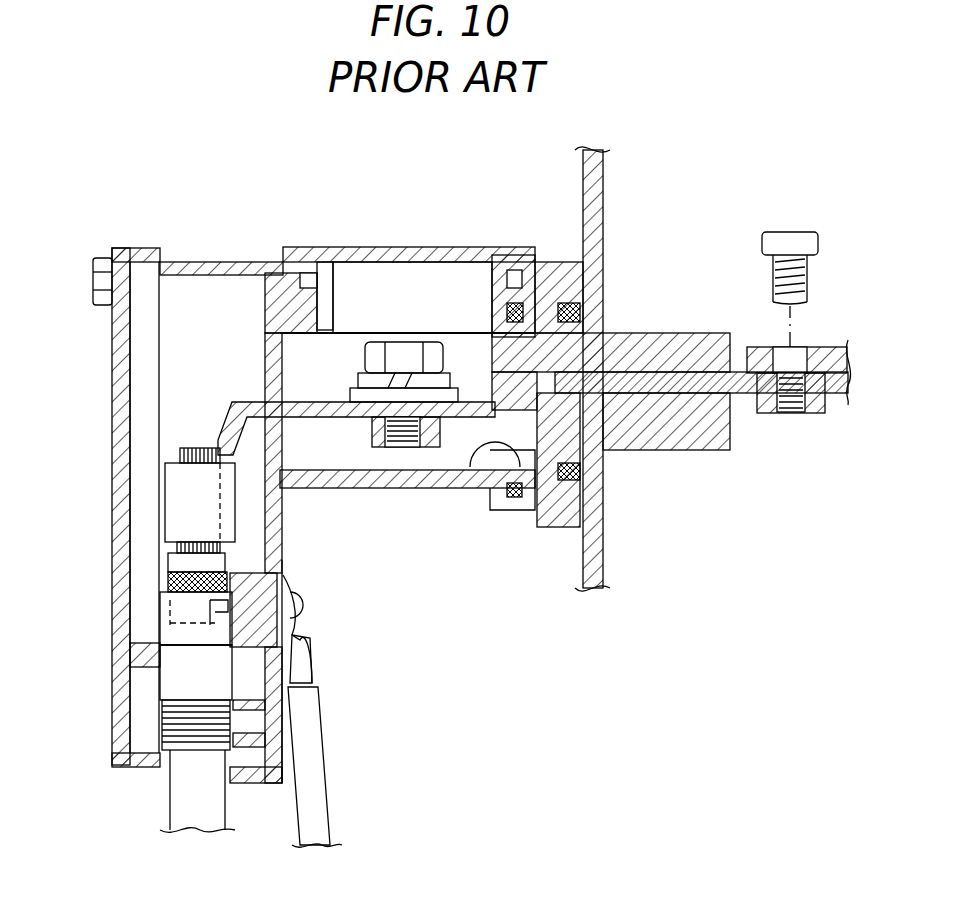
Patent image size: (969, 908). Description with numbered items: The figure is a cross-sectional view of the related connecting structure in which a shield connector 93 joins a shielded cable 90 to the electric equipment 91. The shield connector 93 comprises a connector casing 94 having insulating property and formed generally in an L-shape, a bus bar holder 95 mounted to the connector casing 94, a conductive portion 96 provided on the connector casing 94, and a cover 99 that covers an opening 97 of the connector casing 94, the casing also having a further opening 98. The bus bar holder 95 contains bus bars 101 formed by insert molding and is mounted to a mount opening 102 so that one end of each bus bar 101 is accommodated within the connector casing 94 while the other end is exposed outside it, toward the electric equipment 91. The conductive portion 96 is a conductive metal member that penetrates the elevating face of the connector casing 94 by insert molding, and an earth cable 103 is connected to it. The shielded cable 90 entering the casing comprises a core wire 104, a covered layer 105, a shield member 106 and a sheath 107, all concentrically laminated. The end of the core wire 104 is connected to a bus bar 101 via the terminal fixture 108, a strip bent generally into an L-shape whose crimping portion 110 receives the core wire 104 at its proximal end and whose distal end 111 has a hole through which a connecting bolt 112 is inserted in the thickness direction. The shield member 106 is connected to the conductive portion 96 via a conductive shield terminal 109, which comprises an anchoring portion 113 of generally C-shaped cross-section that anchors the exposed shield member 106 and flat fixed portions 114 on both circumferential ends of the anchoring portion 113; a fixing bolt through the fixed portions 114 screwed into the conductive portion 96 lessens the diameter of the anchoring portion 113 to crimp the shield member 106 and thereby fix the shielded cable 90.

The shielded cable 90 is at (188, 793).
The electric equipment 91 is at (582, 555).
The shield connector 93 is at (281, 192).
The connector casing 94 is at (200, 262).
The bus bar holder 95 is at (572, 262).
The conductive portion 96 is at (283, 585).
The opening 97 is at (345, 285).
The opening 98 is at (180, 277).
The cover 99 is at (428, 247).
The bus bar 101 is at (645, 378).
The mount opening 102 is at (478, 468).
The earth cable 103 is at (313, 780).
The core wire 104 is at (180, 453).
The covered layer 105 is at (177, 553).
The shield member 106 is at (180, 587).
The sheath 107 is at (185, 677).
The terminal fixture 108 is at (244, 403).
The shield terminal 109 is at (58, 600).
The crimping portion 110 is at (178, 498).
The distal end 111 is at (362, 380).
The connecting bolt 112 is at (405, 360).
The anchoring portion 113 is at (170, 605).
The fixed portion 114 is at (222, 633).